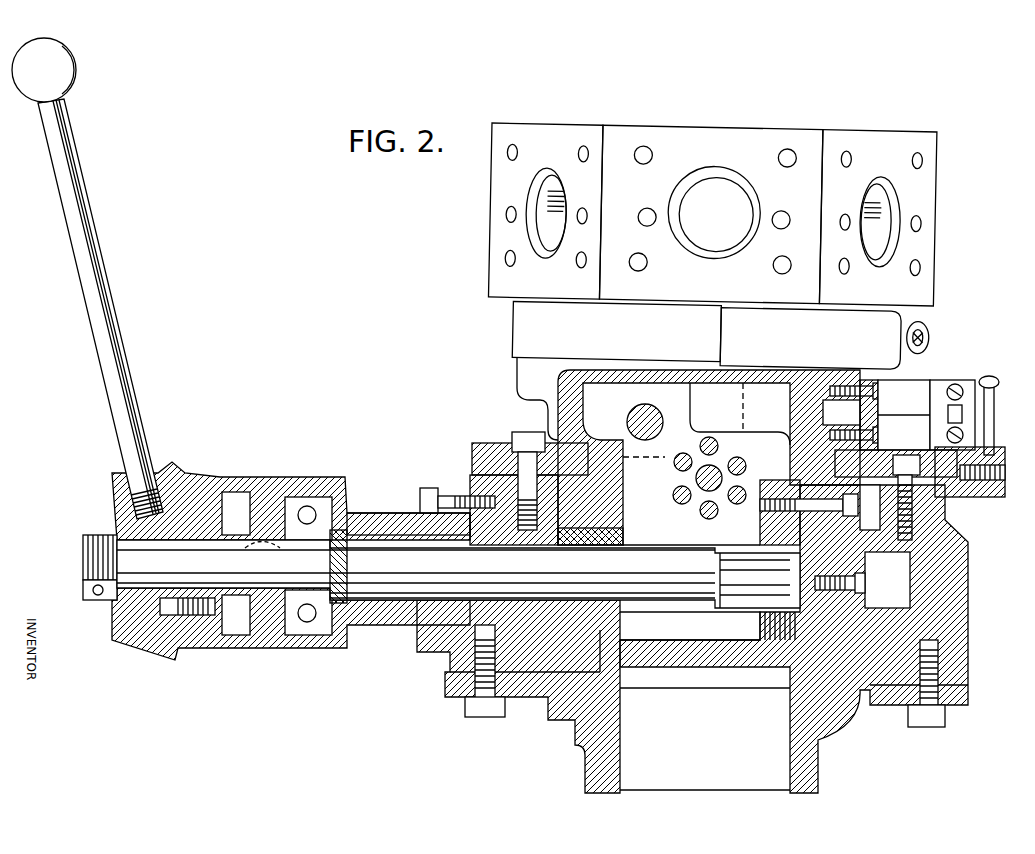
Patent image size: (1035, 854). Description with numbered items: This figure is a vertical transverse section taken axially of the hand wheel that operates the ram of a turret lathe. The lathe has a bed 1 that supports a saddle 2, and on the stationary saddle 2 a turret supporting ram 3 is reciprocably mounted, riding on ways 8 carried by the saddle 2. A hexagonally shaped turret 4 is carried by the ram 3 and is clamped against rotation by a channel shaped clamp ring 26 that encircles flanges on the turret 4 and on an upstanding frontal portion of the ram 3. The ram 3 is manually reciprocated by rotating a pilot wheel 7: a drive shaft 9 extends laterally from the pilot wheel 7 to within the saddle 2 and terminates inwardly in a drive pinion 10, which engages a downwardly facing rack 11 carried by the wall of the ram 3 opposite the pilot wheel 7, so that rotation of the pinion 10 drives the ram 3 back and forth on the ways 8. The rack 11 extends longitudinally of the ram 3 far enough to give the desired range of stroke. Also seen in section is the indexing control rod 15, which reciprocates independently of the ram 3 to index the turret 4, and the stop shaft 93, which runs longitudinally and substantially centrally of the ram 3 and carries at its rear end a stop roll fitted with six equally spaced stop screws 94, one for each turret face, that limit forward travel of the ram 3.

The bed 1 is at (560, 708).
The saddle 2 is at (468, 474).
The turret supporting ram 3 is at (557, 385).
The turret 4 is at (490, 210).
The pilot wheel 7 is at (110, 473).
The ways 8 is at (623, 532).
The drive shaft 9 is at (390, 548).
The drive pinion 10 is at (756, 622).
The rack 11 is at (770, 510).
The indexing control rod 15 is at (650, 413).
The clamp ring 26 is at (934, 331).
The stop shaft 93 is at (696, 479).
The stop screws 94 is at (718, 447).